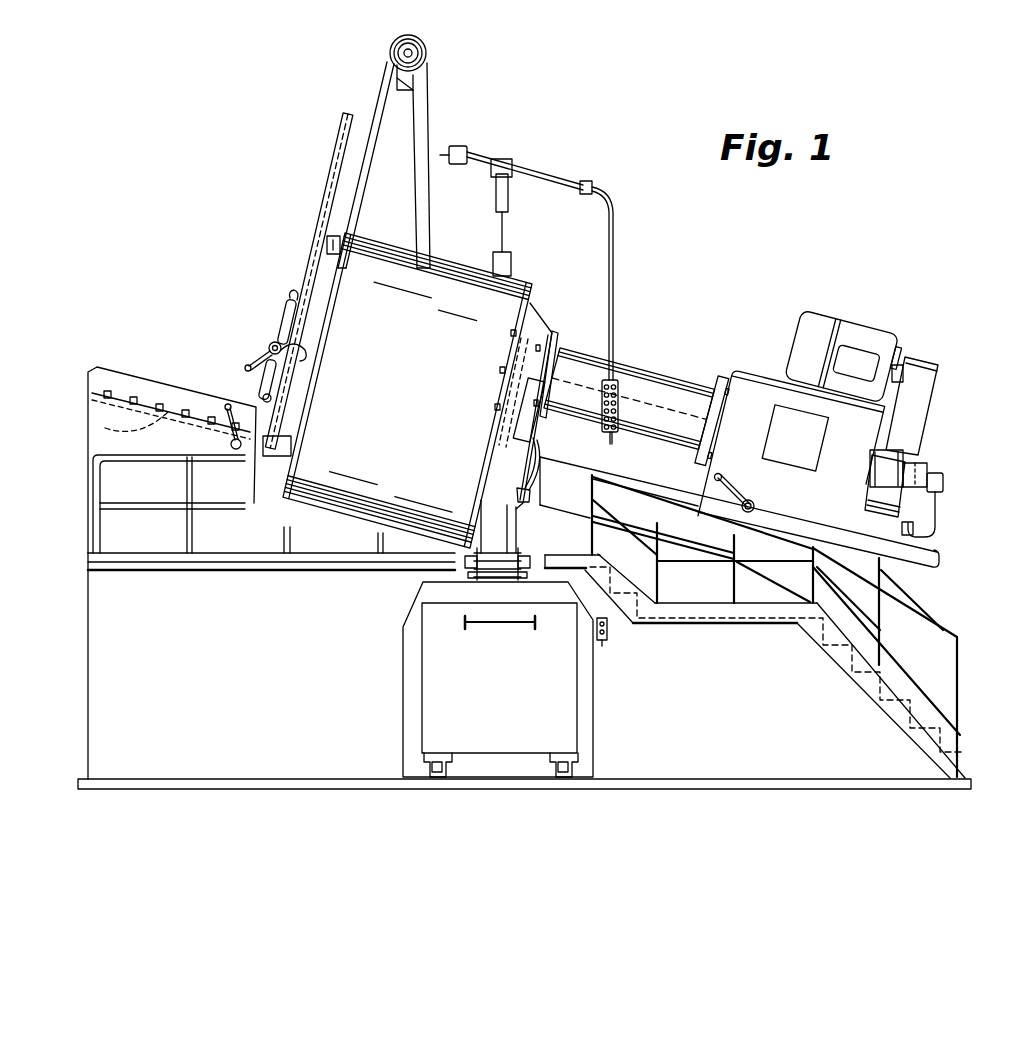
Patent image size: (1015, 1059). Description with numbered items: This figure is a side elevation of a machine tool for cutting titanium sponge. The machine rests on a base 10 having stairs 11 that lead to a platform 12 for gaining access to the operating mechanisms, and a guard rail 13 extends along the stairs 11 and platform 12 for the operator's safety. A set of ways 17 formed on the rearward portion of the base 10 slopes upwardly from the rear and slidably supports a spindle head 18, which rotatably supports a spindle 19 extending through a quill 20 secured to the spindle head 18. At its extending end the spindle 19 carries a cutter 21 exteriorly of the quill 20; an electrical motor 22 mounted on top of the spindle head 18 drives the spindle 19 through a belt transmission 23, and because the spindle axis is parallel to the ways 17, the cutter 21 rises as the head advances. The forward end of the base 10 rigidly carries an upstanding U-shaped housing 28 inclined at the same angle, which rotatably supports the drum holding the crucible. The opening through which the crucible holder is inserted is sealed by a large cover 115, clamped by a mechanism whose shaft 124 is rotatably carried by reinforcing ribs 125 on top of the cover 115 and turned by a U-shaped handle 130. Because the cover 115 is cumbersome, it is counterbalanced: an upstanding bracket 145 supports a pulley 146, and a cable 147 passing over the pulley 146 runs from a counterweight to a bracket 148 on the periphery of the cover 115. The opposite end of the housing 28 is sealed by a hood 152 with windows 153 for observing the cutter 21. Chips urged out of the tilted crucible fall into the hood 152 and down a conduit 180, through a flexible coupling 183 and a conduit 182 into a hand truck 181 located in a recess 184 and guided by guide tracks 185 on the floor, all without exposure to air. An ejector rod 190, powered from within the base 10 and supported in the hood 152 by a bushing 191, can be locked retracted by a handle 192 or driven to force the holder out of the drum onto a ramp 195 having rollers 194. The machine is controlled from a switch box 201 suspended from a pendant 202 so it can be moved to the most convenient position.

The base 10 is at (118, 623).
The stairs 11 is at (905, 700).
The platform 12 is at (100, 548).
The guard rail 13 is at (957, 628).
The ways 17 is at (582, 466).
The spindle head 18 is at (752, 376).
The spindle 19 is at (652, 388).
The quill 20 is at (615, 368).
The cutter 21 is at (500, 356).
The electrical motor 22 is at (850, 330).
The belt transmission 23 is at (915, 426).
The housing 28 is at (430, 282).
The cover 115 is at (312, 283).
The shaft 124 is at (282, 347).
The reinforcing ribs 125 is at (290, 322).
The handle 130 is at (262, 360).
The bracket 145 is at (405, 120).
The pulley 146 is at (427, 48).
The cable 147 is at (432, 132).
The bracket 148 is at (332, 236).
The hood 152 is at (550, 342).
The windows 153 is at (531, 322).
The conduit 180 is at (492, 527).
The hand truck 181 is at (566, 705).
The conduit 182 is at (498, 582).
The flexible coupling 183 is at (492, 571).
The recess 184 is at (585, 676).
The guide tracks 185 is at (578, 775).
The ejector rod 190 is at (529, 501).
The bushing 191 is at (536, 458).
The handle 192 is at (731, 480).
The rollers 194 is at (115, 383).
The ramp 195 is at (105, 426).
The switch box 201 is at (622, 406).
The pendant 202 is at (614, 247).